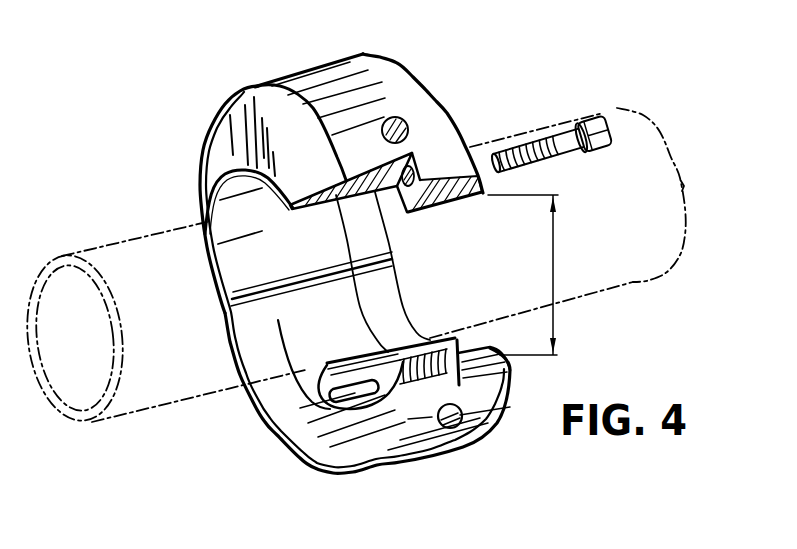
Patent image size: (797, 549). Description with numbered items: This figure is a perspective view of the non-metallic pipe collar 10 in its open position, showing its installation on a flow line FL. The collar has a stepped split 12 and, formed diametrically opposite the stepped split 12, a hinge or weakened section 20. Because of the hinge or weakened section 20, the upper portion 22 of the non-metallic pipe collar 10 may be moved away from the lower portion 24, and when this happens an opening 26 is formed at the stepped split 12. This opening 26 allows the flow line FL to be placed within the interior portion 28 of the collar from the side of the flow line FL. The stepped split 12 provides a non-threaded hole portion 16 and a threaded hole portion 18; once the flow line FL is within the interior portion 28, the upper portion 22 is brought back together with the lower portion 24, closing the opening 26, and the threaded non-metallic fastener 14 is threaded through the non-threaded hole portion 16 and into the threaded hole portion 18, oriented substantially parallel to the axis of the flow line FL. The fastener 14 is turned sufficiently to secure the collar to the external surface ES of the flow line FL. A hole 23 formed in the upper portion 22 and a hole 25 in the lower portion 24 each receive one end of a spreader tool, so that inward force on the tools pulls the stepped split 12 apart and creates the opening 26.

The non-metallic pipe collar 10 is at (288, 78).
The stepped split 12 is at (328, 186).
The threaded non-metallic fastener 14 is at (603, 112).
The non-threaded hole portion 16 is at (404, 213).
The threaded hole portion 18 is at (417, 420).
The hinge or weakened section 20 is at (228, 300).
The upper portion 22 is at (397, 68).
The hole 23 is at (408, 122).
The lower portion 24 is at (310, 465).
The hole 25 is at (455, 430).
The opening 26 is at (556, 263).
The interior portion 28 is at (268, 363).
The external surface ES is at (633, 157).
The flow line FL is at (683, 188).